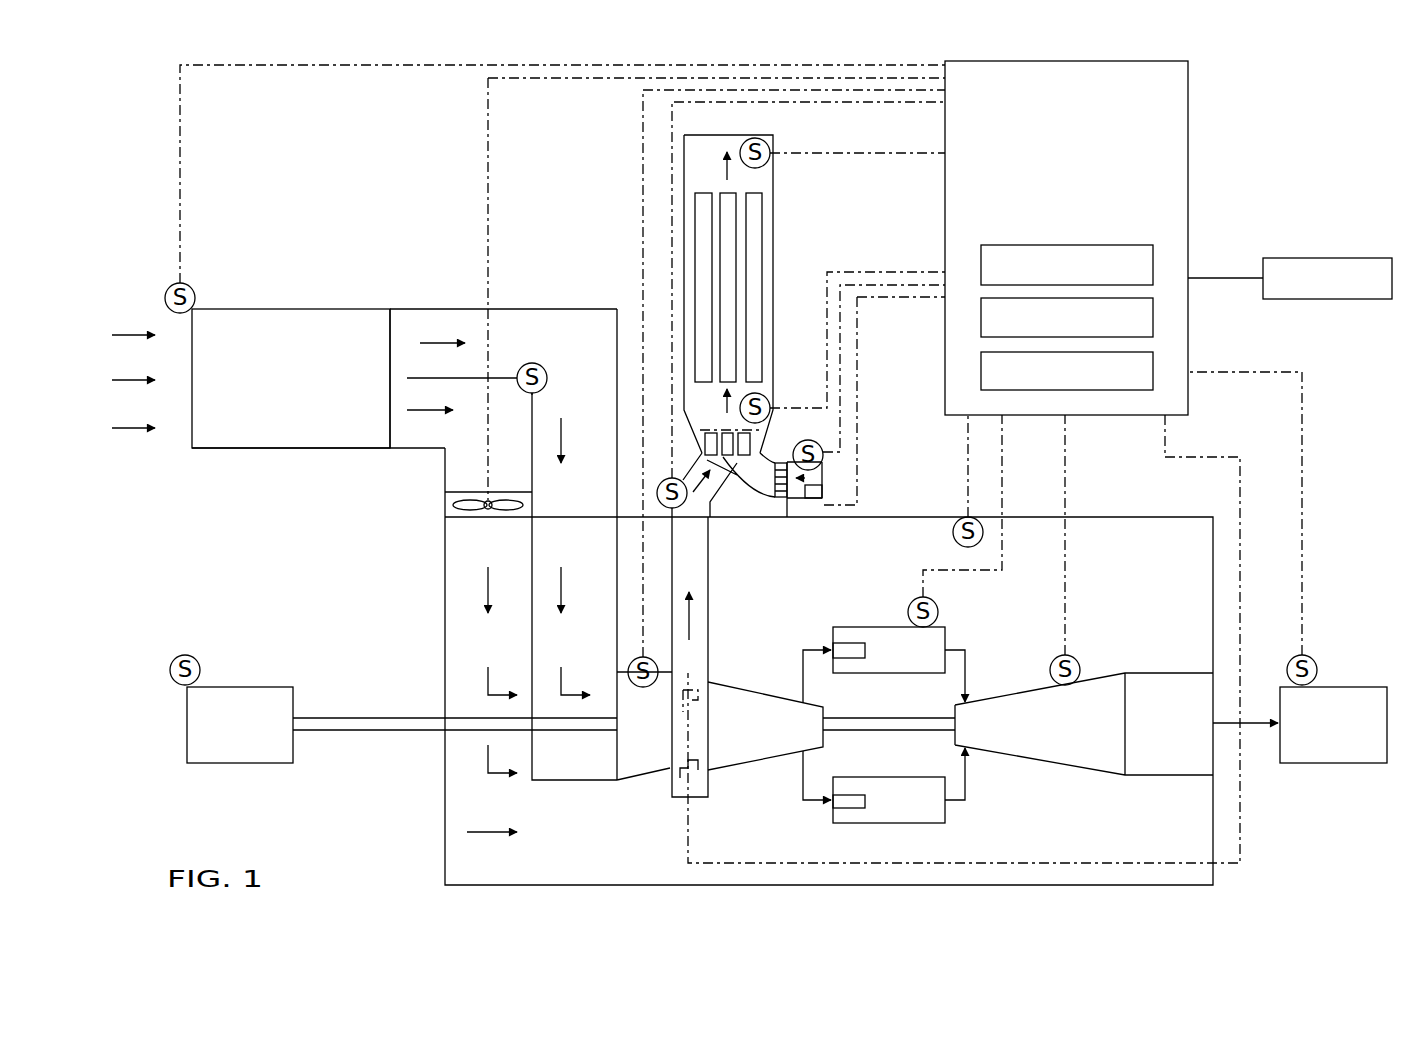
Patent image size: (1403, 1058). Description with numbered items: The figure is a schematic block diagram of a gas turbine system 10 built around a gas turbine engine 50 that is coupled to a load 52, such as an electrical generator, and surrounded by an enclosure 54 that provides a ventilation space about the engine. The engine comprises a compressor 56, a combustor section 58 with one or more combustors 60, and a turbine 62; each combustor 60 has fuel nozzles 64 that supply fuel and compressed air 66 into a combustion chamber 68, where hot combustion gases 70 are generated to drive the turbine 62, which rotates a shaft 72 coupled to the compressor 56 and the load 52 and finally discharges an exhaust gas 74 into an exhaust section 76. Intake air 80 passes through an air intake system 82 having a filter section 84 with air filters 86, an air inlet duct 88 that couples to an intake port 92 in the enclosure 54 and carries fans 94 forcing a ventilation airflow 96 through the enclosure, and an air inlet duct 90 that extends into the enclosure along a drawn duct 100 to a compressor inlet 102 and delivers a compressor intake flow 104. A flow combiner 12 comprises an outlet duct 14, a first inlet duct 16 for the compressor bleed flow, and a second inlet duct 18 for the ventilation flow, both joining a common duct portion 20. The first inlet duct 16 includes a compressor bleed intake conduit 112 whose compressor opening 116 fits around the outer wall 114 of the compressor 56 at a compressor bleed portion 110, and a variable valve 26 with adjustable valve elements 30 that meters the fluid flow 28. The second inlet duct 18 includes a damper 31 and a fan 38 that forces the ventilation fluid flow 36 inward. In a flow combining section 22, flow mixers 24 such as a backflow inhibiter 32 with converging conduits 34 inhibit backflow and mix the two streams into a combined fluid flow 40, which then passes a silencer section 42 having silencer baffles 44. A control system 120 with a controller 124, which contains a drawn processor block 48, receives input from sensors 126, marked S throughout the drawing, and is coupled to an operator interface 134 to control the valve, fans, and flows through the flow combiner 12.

The gas turbine system 10 is at (1270, 88).
The flow combiner 12 is at (776, 184).
The outlet duct 14 is at (775, 212).
The first inlet duct 16 is at (708, 590).
The second inlet duct 18 is at (752, 497).
The common duct portion 20 is at (688, 470).
The flow combining section 22 is at (688, 443).
The flow mixers 24 is at (700, 425).
The variable valve 26 is at (668, 780).
The fluid flow 28 is at (692, 640).
The adjustable valve elements 30 is at (680, 725).
The damper 31 is at (790, 465).
The backflow inhibiter 32 is at (773, 438).
The conduits 34 is at (737, 465).
The fluid flow 36 is at (823, 487).
The fan 38 is at (812, 507).
The combined fluid flow 40 is at (723, 407).
The silencer section 42 is at (775, 274).
The silencer baffles 44 is at (762, 245).
The processor 48 is at (1153, 266).
The gas turbine engine 50 is at (1153, 318).
The load 52 is at (1153, 360).
The enclosure 54 is at (445, 857).
The compressor 56 is at (762, 748).
The combustor section 58 is at (927, 831).
The combustors 60 is at (887, 662).
The turbine 62 is at (1040, 738).
The fuel nozzles 64 is at (865, 650).
The compressed air 66 is at (803, 680).
The combustion chamber 68 is at (928, 643).
The hot combustion gases 70 is at (968, 668).
The shaft 72 is at (865, 735).
The exhaust gas 74 is at (1250, 728).
The exhaust section 76 is at (1335, 763).
The intake air 80 is at (133, 430).
The air intake system 82 is at (345, 545).
The filter section 84 is at (300, 452).
The air filters 86 is at (262, 448).
The air inlet duct 88 is at (412, 448).
The air inlet duct 90 is at (407, 322).
The intake port 92 is at (462, 520).
The fans 94 is at (452, 507).
The ventilation airflow 96 is at (427, 415).
The duct 100 is at (534, 538).
The compressor inlet 102 is at (615, 783).
The compressor intake flow 104 is at (432, 343).
The compressor bleed portion 110 is at (735, 742).
The compressor bleed intake conduit 112 is at (700, 720).
The outer wall 114 is at (720, 765).
The compressor opening 116 is at (668, 772).
The control system 120 is at (1270, 200).
The controller 124 is at (1188, 178).
The sensors 126 is at (192, 290).
The operator interface 134 is at (1350, 300).